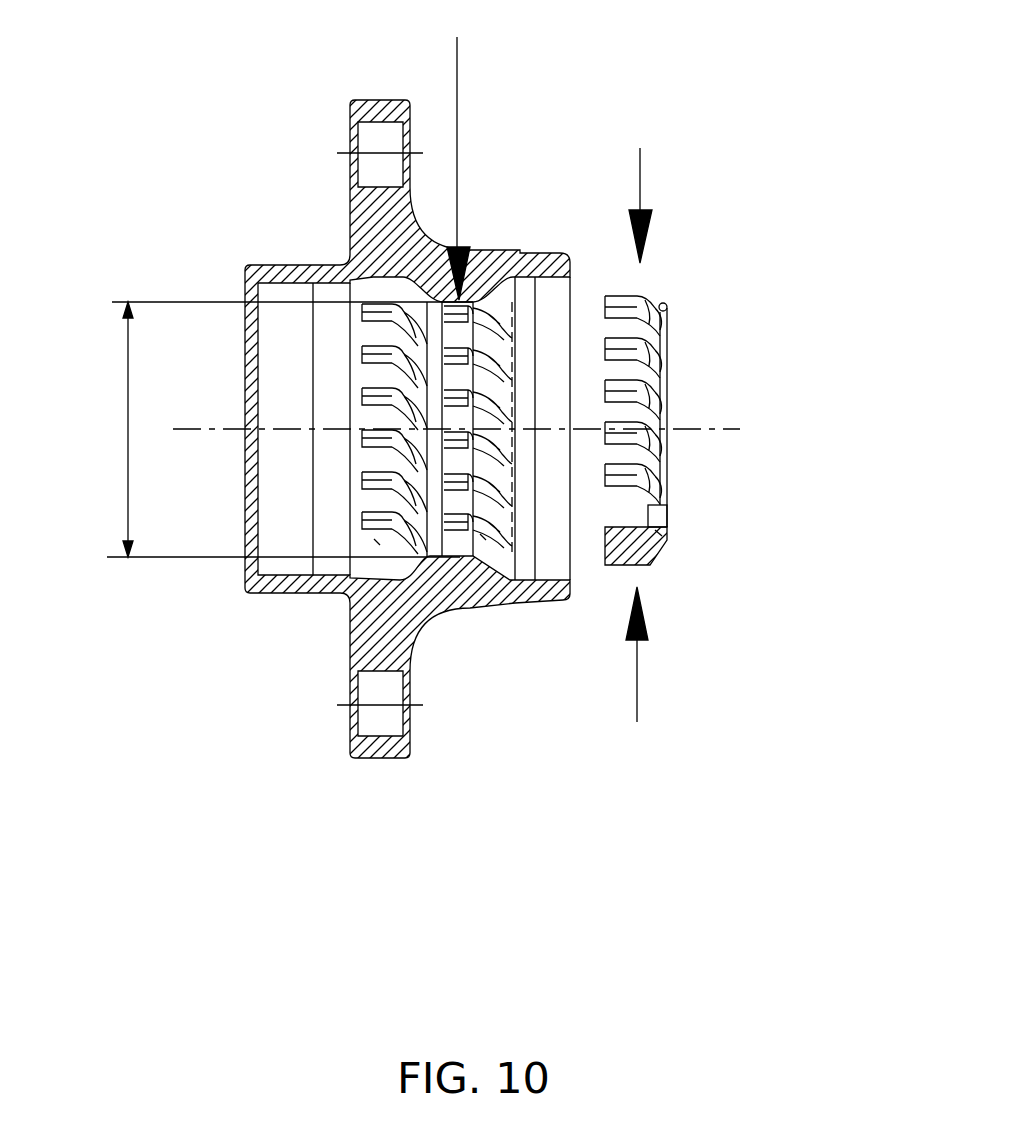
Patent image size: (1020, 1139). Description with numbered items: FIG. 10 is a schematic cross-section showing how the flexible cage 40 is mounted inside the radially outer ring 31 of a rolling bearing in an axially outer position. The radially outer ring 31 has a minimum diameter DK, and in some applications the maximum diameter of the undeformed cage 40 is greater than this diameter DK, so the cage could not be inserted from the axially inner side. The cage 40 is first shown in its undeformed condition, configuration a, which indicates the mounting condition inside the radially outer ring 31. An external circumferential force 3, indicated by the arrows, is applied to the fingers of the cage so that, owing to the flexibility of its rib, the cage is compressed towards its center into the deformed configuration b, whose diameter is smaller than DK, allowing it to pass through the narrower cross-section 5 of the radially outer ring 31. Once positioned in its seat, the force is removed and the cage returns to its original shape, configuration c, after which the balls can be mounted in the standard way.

The radially outer ring 31 is at (270, 263).
The narrower cross-section 5 is at (458, 152).
The external circumferential force 3 is at (639, 440).
The cage 40 is at (650, 478).
The undeformed configuration a is at (658, 533).
The deformed configuration b is at (483, 537).
The returned configuration c is at (377, 542).
The minimum diameter DK is at (266, 429).